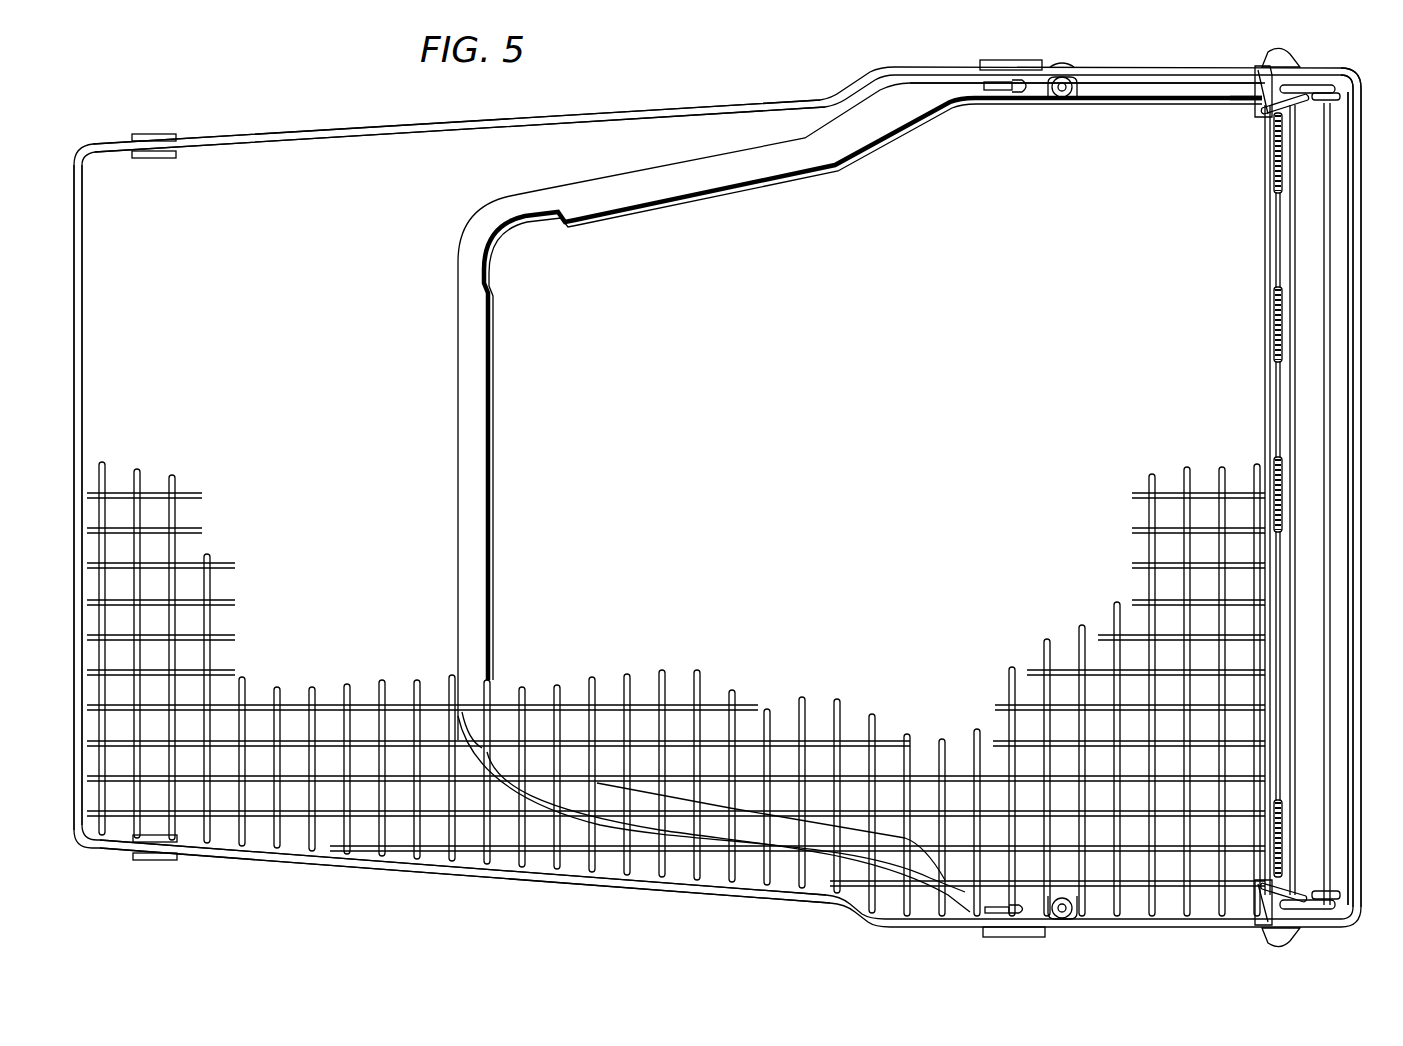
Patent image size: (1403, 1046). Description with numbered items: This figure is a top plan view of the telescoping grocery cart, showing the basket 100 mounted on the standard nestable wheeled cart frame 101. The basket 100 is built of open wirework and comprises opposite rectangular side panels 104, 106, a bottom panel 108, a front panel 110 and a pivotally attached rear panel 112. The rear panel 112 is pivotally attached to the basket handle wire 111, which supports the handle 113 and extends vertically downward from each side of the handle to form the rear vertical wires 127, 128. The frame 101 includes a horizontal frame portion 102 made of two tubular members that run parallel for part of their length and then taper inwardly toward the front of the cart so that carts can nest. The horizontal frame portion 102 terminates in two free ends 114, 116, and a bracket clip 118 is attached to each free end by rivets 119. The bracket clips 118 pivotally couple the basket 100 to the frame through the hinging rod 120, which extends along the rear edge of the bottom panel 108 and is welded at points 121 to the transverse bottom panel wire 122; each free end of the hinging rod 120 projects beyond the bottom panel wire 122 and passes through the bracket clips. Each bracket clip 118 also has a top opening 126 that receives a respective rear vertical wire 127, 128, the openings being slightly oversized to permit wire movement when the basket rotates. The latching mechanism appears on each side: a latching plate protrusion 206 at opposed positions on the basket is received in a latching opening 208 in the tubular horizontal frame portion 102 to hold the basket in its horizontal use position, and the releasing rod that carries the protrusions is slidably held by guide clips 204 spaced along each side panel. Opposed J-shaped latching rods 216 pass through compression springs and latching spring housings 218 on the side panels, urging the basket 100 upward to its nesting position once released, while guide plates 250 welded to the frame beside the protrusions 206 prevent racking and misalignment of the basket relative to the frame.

The basket 100 is at (571, 114).
The wheeled cart frame 101 is at (457, 394).
The horizontal frame portion 102 is at (470, 476).
The side panel 104 is at (470, 879).
The side panel 106 is at (348, 124).
The bottom panel 108 is at (290, 694).
The front panel 110 is at (88, 369).
The basket handle wire 111 is at (1357, 82).
The rear panel 112 is at (1298, 100).
The handle 113 is at (1350, 208).
The free end 114 is at (1170, 906).
The free end 116 is at (1170, 90).
The bracket clip 118 is at (1248, 94).
The rivet 119 is at (1280, 54).
The hinging rod 120 is at (1285, 262).
The weld point 121 is at (1276, 318).
The transverse bottom panel wire 122 is at (1272, 396).
The top opening 126 is at (1265, 88).
The rear vertical wire 127 is at (1355, 906).
The rear vertical wire 128 is at (1305, 85).
The guide clip 204 is at (174, 134).
The latching plate protrusion 206 is at (998, 92).
The latching opening 208 is at (1030, 93).
The J-shaped latching rod 216 is at (1062, 76).
The latching spring housing 218 is at (1076, 96).
The guide plate 250 is at (1010, 60).